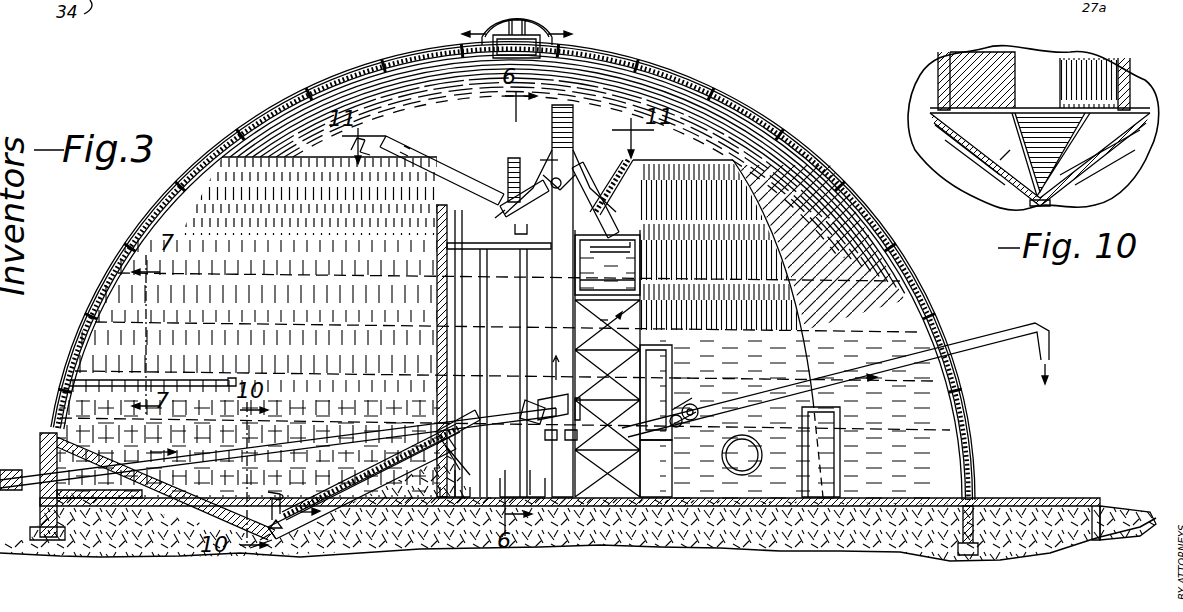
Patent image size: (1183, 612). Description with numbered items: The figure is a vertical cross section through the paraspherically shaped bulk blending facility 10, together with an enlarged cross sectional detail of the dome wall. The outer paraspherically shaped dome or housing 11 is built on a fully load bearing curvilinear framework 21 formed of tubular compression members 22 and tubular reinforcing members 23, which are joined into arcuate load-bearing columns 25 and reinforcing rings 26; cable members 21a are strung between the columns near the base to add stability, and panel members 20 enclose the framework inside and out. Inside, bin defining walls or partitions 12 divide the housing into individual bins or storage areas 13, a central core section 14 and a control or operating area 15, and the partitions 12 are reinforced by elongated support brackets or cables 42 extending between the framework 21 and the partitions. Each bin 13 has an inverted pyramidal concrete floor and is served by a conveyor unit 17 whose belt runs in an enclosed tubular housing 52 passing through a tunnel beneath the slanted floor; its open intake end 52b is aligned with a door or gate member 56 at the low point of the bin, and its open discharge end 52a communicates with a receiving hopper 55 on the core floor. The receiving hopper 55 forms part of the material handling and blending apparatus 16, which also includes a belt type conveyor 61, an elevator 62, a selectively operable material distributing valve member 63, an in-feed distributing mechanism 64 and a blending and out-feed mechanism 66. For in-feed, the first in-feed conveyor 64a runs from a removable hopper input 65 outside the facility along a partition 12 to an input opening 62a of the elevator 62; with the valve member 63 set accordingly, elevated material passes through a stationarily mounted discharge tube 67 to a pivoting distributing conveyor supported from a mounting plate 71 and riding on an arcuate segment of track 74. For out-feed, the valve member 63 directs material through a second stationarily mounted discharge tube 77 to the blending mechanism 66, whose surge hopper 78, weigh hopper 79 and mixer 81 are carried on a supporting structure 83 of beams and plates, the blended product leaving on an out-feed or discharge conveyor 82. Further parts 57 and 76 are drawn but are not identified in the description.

In FIG. 3, the paraspherically shaped bulk blending facility 10 is at (254, 114).
In FIG. 3, the paraspherically shaped dome or housing 11 is at (140, 224).
In FIG. 3, the bin defining walls or partitions 12 is at (312, 223).
In FIG. 10, the bin defining walls or partitions 12 is at (938, 72).
In FIG. 3, the bins or storage areas 13 is at (225, 235).
In FIG. 10, the bins or storage areas 13 is at (993, 78).
In FIG. 3, the central core section 14 is at (504, 313).
In FIG. 3, the control or operating area 15 is at (925, 292).
In FIG. 3, the material handling and blending apparatus 16 is at (642, 304).
In FIG. 3, the conveyor units 17 is at (334, 488).
In FIG. 10, the conveyor units 17 is at (1082, 102).
In FIG. 3, the panel members 20 is at (359, 78).
In FIG. 3, the curvilinear framework 21 is at (776, 130).
In FIG. 3, the cable members 21a is at (240, 277).
In FIG. 3, the tubular compression members 22 is at (836, 174).
In FIG. 3, the tubular reinforcing members 23 is at (855, 194).
In FIG. 3, the load-bearing columns 25 is at (706, 76).
In FIG. 3, the reinforcing rings 26 is at (628, 64).
In FIG. 3, the elongated support brackets or cables 42 is at (178, 378).
In FIG. 3, the enclosed tubular housing 52 is at (362, 498).
In FIG. 3, the open discharge end 52a is at (464, 512).
In FIG. 3, the open intake end 52b is at (280, 540).
In FIG. 10, the open intake end 52b is at (1075, 196).
In FIG. 3, the receiving hopper 55 is at (532, 498).
In FIG. 3, the door or gate member 56 is at (268, 502).
In FIG. 10, the door or gate member 56 is at (1052, 192).
In FIG. 3, the inclined conveyor 57 is at (382, 452).
In FIG. 3, the belt type conveyor 61 is at (538, 434).
In FIG. 3, the elevator 62 is at (554, 273).
In FIG. 3, the input opening 62a is at (563, 400).
In FIG. 3, the material distributing valve member 63 is at (556, 180).
In FIG. 3, the in-feed distributing mechanism 64 is at (456, 186).
In FIG. 3, the first in-feed conveyor 64a is at (422, 436).
In FIG. 3, the hopper input 65 is at (8, 464).
In FIG. 3, the blending and out-feed mechanism 66 is at (632, 232).
In FIG. 3, the stationarily mounted discharge tube 67 is at (530, 190).
In FIG. 3, the mounting plate 71 is at (497, 249).
In FIG. 3, the arcuate segment of track 74 is at (439, 216).
In FIG. 3, the gate 76 is at (640, 292).
In FIG. 3, the stationarily mounted discharge tube 77 is at (602, 170).
In FIG. 3, the surge hopper 78 is at (606, 268).
In FIG. 3, the weigh hopper 79 is at (607, 280).
In FIG. 3, the mixer 81 is at (656, 392).
In FIG. 3, the out-feed or discharge conveyor 82 is at (751, 386).
In FIG. 3, the supporting structure 83 is at (670, 480).